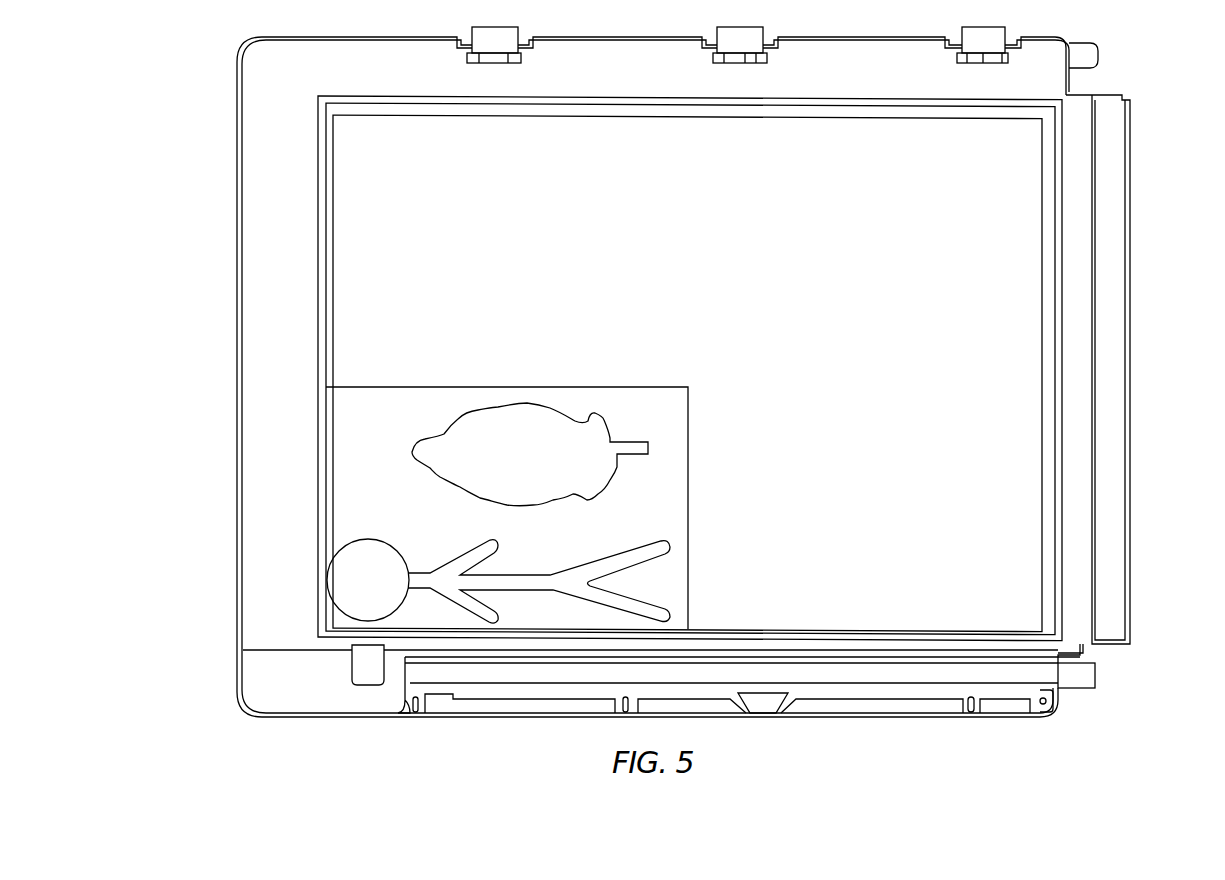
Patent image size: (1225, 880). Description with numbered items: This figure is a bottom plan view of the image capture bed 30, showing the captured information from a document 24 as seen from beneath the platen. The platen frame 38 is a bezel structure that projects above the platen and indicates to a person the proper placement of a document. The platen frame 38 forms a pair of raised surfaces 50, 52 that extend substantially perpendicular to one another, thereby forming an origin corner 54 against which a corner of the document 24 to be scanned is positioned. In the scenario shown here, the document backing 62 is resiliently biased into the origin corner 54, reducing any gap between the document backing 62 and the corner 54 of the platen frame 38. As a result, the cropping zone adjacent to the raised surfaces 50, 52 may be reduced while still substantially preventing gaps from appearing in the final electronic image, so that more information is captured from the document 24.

The document 24 is at (418, 407).
The image capture bed 30 is at (1115, 316).
The platen frame 38 is at (267, 412).
The raised surface 50 is at (323, 557).
The raised surface 52 is at (348, 630).
The origin corner 54 is at (320, 628).
The document backing 62 is at (1000, 518).